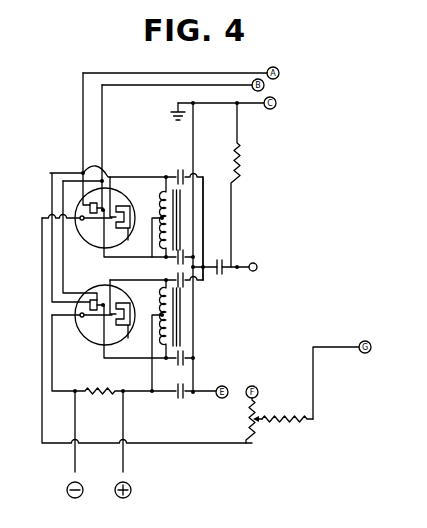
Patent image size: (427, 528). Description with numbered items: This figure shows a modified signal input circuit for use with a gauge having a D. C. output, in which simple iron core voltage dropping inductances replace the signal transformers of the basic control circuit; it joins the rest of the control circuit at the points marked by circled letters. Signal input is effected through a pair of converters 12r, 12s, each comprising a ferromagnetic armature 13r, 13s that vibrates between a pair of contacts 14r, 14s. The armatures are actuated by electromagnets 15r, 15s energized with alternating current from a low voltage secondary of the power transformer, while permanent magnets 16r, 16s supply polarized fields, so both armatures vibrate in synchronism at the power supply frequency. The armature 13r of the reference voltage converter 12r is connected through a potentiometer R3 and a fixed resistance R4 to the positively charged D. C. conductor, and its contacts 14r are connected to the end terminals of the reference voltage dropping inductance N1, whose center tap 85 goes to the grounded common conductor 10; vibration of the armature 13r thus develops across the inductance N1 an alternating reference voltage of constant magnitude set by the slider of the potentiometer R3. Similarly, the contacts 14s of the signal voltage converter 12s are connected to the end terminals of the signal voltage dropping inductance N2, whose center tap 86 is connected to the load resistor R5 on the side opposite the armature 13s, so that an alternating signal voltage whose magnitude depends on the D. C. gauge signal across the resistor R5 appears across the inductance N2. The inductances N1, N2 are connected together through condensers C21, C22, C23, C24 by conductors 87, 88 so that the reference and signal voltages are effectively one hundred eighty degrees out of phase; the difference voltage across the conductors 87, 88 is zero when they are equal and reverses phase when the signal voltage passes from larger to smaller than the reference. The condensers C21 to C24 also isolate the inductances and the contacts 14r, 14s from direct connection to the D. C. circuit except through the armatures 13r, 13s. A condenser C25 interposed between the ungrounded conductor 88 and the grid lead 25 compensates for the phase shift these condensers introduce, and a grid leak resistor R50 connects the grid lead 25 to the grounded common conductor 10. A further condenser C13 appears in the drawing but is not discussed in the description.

The grounded common conductor 10 is at (218, 100).
The reference voltage converter 12r is at (90, 246).
The signal voltage converter 12s is at (83, 342).
The ferromagnetic armature 13r is at (111, 199).
The ferromagnetic armature 13s is at (109, 292).
The contacts 14r is at (102, 220).
The contacts 14s is at (102, 317).
The electromagnet 15r is at (83, 172).
The electromagnet 15s is at (90, 300).
The permanent magnet 16r is at (121, 236).
The permanent magnet 16s is at (121, 334).
The grid lead conductor 25 is at (250, 265).
The center tap 85 is at (162, 217).
The center tap 86 is at (162, 314).
The conductor 87 is at (199, 264).
The ungrounded conductor 88 is at (203, 217).
The reference voltage dropping inductance N1 is at (163, 217).
The signal voltage dropping inductance N2 is at (163, 319).
The capacitor C13 is at (178, 398).
The condenser C21 is at (178, 169).
The condenser C22 is at (188, 253).
The condenser C23 is at (184, 287).
The condenser C24 is at (178, 365).
The condenser C25 is at (220, 275).
The potentiometer R3 is at (250, 419).
The fixed resistance R4 is at (285, 418).
The load resistor R5 is at (99, 400).
The grid leak resistor R50 is at (241, 166).